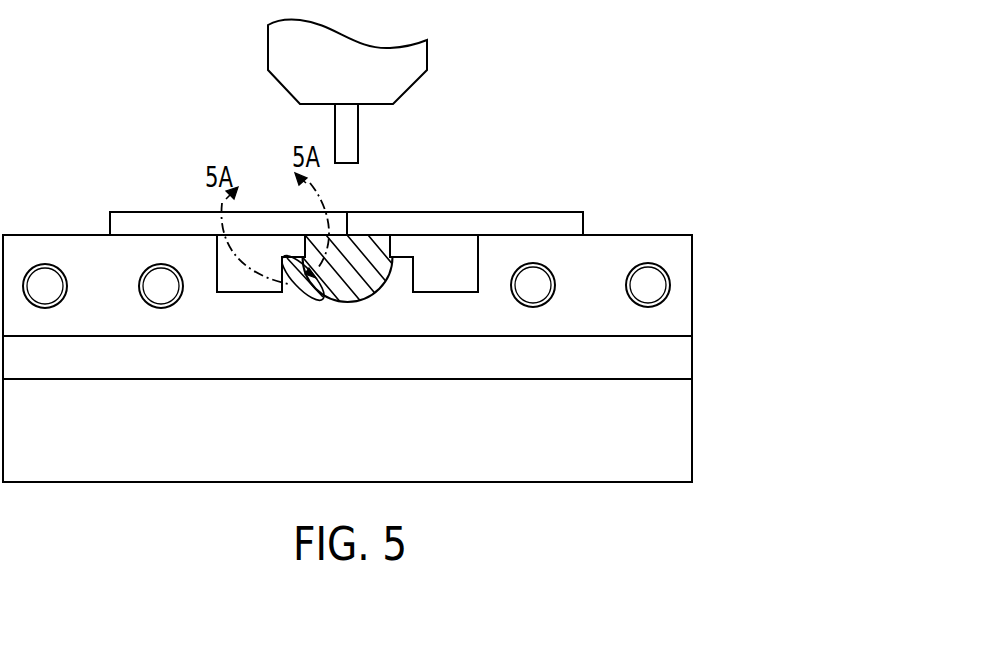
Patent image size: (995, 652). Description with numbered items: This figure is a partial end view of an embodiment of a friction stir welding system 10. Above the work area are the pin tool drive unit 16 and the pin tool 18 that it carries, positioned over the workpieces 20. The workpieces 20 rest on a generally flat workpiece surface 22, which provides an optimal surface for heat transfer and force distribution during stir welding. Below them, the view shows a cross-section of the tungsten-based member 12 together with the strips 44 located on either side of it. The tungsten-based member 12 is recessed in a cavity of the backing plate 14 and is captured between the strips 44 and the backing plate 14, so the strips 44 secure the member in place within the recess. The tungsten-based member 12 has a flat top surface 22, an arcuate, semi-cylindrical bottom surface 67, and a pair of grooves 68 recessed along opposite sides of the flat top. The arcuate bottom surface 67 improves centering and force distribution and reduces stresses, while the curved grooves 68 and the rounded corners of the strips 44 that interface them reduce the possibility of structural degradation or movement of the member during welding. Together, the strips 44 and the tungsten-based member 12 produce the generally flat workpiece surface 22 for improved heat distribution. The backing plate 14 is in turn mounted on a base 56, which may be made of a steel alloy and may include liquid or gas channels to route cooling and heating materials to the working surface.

The friction stir welding system 10 is at (143, 83).
The tungsten-based member 12 is at (377, 240).
The backing plate 14 is at (608, 248).
The pin tool drive unit 16 is at (283, 52).
The pin tool 18 is at (350, 135).
The workpieces 20 is at (122, 218).
The workpiece surface 22 is at (424, 234).
The strips 44 is at (222, 268).
The base 56 is at (515, 470).
The arcuate bottom surface 67 is at (370, 300).
The grooves 68 is at (320, 300).